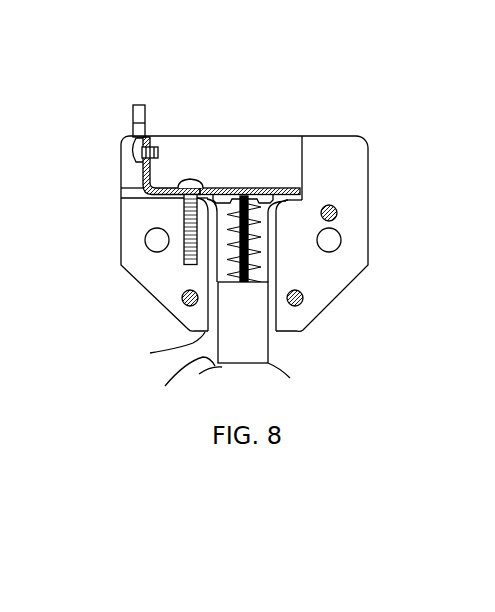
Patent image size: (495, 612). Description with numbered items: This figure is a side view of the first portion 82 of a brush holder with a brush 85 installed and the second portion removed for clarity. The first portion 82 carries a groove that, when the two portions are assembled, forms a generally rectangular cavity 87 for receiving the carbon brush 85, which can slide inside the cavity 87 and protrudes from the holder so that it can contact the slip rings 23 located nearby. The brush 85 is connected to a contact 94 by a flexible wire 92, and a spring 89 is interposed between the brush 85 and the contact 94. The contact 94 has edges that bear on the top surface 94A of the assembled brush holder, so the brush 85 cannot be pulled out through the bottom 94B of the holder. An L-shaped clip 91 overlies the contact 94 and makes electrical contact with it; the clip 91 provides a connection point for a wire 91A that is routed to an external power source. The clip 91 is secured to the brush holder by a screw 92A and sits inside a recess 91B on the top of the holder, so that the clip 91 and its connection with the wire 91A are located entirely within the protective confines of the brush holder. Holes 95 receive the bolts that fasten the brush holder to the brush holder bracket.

The slip rings 23 is at (165, 385).
The first portion 82 is at (160, 136).
The brush 85 is at (243, 343).
The cavity 87 is at (263, 267).
The spring 89 is at (302, 193).
The clip 91 is at (161, 184).
The wire 91A is at (133, 115).
The recess 91B is at (168, 155).
The flexible wire 92 is at (253, 240).
The screw 92A is at (183, 215).
The contact 94 is at (250, 198).
The top surface 94A is at (218, 196).
The bottom 94B is at (150, 353).
The holes 95 is at (157, 240).